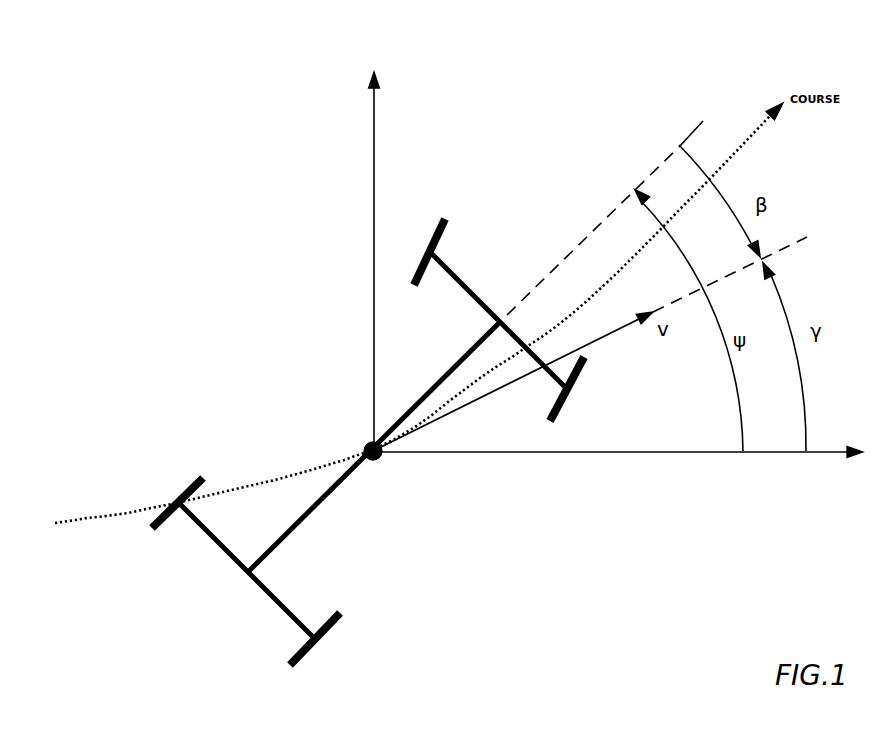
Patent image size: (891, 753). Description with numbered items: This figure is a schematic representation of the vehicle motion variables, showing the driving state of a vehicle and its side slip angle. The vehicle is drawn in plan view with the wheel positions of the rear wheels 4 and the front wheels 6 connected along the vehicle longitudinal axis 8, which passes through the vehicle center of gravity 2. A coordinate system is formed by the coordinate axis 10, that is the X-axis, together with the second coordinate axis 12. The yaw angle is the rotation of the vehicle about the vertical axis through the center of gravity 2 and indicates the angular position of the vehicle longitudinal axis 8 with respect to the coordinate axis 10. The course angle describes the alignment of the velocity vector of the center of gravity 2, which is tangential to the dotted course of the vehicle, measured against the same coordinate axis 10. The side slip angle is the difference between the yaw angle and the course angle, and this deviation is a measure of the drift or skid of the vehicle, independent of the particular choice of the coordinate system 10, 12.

The vehicle center of gravity 2 is at (377, 458).
The rear wheels 4 is at (290, 660).
The front wheels 6 is at (582, 355).
The vehicle longitudinal axis 8 is at (612, 182).
The coordinate axis 10 is at (812, 452).
The coordinate axis 12 is at (374, 110).